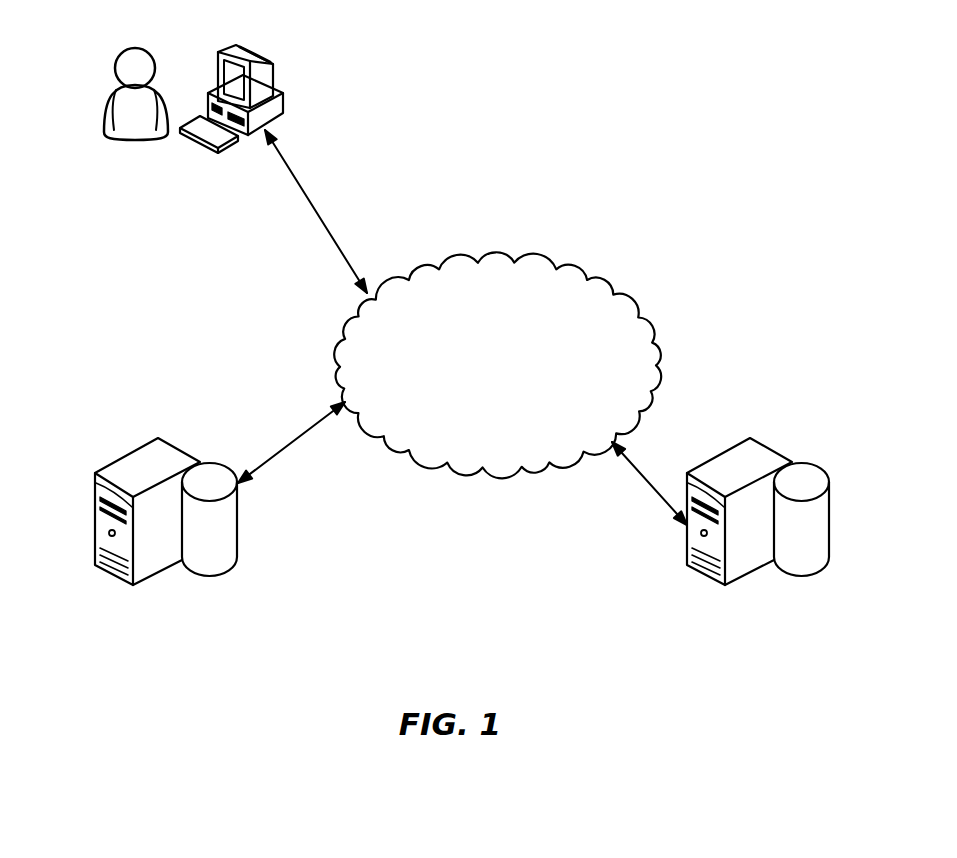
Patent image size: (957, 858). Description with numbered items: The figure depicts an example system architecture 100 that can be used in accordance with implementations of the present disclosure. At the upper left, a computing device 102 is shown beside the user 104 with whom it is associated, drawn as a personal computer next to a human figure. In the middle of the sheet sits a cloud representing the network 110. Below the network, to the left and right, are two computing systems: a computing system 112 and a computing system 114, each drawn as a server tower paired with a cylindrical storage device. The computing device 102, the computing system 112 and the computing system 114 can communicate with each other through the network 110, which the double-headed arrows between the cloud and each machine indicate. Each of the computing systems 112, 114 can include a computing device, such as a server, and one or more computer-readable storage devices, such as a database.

The system architecture 100 is at (686, 207).
The computing device 102 is at (236, 50).
The user 104 is at (113, 84).
The network 110 is at (492, 257).
The computing system 112 is at (177, 530).
The computing system 114 is at (769, 532).